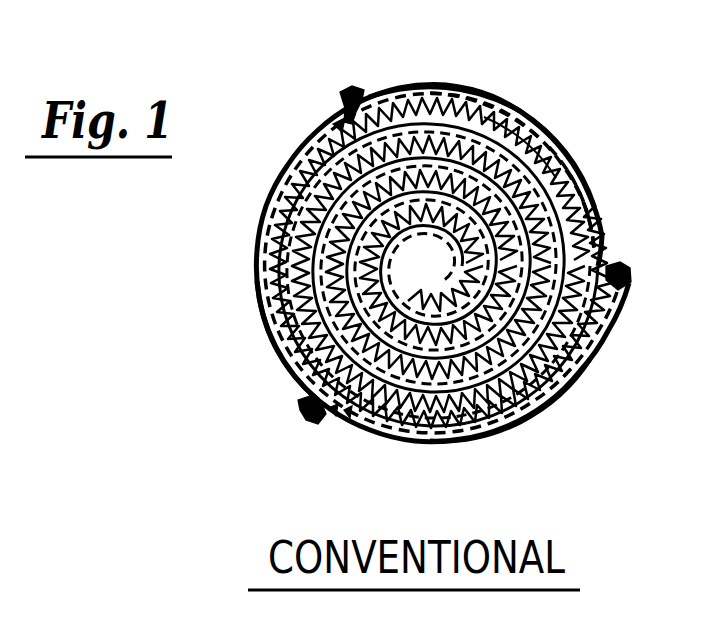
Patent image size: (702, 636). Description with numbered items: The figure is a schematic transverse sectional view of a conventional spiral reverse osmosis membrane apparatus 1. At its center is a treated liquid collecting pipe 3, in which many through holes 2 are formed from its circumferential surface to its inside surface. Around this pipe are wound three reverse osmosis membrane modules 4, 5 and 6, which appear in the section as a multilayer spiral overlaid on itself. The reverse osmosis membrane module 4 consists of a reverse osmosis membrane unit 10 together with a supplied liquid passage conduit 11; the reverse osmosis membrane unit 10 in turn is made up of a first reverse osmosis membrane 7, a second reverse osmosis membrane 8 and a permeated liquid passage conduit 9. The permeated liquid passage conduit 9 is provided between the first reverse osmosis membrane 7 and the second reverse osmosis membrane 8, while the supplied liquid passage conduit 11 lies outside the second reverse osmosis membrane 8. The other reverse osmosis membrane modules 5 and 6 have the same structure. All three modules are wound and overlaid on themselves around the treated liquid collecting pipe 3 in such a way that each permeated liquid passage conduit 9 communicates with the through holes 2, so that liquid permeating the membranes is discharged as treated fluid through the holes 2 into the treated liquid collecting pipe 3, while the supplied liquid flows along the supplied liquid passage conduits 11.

The reverse osmosis membrane apparatus 1 is at (608, 300).
The through holes 2 is at (333, 148).
The treated liquid collecting pipe 3 is at (552, 353).
The reverse osmosis membrane module 4 is at (485, 93).
The reverse osmosis membrane module 5 is at (531, 416).
The reverse osmosis membrane module 6 is at (270, 346).
The first reverse osmosis membrane 7 is at (515, 115).
The second reverse osmosis membrane 8 is at (545, 140).
The permeated liquid passage conduit 9 is at (433, 82).
The reverse osmosis membrane unit 10 is at (572, 167).
The supplied liquid passage conduit 11 is at (583, 195).